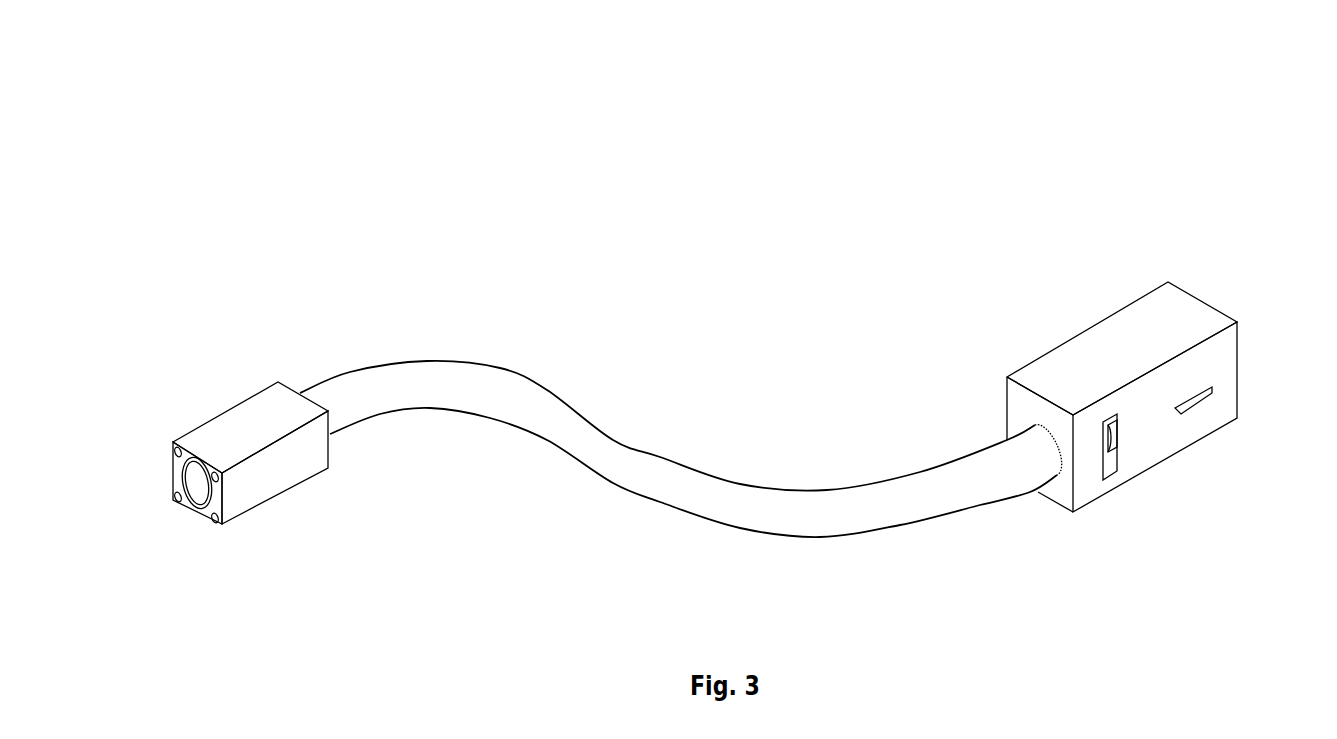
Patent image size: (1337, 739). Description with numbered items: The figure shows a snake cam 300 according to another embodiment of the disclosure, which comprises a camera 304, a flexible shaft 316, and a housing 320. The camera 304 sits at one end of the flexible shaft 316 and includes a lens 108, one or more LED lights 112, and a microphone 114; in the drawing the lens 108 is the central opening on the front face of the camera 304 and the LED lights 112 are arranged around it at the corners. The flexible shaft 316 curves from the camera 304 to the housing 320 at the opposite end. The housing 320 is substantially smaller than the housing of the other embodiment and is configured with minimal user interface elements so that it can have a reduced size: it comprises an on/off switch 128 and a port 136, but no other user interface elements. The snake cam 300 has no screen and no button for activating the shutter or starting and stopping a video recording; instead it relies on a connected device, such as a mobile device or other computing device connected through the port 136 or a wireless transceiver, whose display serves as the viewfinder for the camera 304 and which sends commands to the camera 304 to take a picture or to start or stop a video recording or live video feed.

The snake cam 300 is at (753, 107).
The camera 304 is at (240, 468).
The lens 108 is at (193, 480).
The microphone 114 is at (176, 448).
The LED lights 112 is at (178, 497).
The flexible shaft 316 is at (660, 457).
The housing 320 is at (1203, 302).
The on/off switch 128 is at (1112, 475).
The port 136 is at (1185, 410).